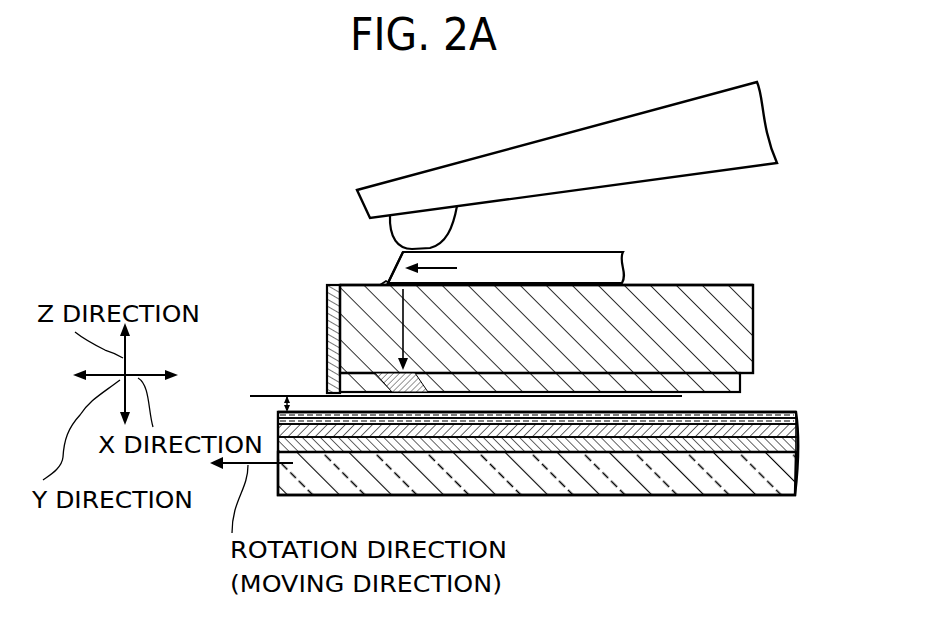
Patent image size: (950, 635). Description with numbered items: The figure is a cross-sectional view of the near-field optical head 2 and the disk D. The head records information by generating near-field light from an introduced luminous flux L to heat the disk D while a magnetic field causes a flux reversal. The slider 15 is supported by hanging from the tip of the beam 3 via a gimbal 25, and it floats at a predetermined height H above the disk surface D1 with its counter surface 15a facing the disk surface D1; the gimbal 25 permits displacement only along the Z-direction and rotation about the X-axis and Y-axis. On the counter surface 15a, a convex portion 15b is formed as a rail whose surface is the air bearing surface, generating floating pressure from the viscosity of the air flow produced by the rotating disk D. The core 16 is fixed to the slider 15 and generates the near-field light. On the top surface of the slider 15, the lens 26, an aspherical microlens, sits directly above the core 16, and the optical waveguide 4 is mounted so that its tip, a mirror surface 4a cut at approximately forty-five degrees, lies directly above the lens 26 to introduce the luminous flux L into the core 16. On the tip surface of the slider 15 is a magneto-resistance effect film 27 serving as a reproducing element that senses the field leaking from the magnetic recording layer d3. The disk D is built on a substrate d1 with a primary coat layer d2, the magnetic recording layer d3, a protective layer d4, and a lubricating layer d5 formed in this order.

The near-field optical head 2 is at (272, 188).
The beam 3 is at (600, 147).
The optical waveguide 4 is at (580, 265).
The mirror surface 4a is at (400, 259).
The gimbal 25 is at (405, 232).
The lens 26 is at (387, 285).
The magneto-resistance effect film 27 is at (330, 323).
The slider 15 is at (742, 328).
The counter surface 15a is at (713, 370).
The convex portion 15b is at (657, 385).
The core 16 is at (422, 360).
The luminous flux L is at (447, 262).
The floating height H is at (283, 402).
The disk D is at (796, 408).
The disk surface D1 is at (761, 409).
The lubricating layer d5 is at (795, 415).
The protective layer d4 is at (795, 421).
The magnetic recording layer d3 is at (795, 430).
The primary coat layer d2 is at (796, 445).
The substrate d1 is at (796, 476).